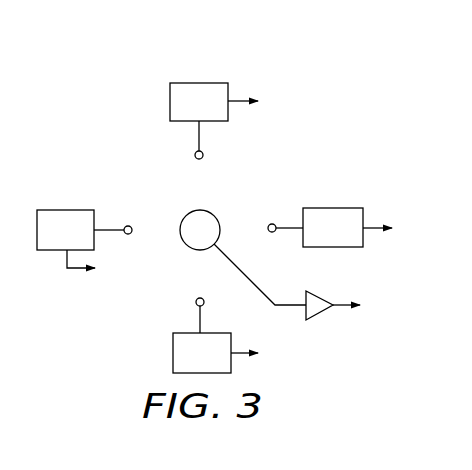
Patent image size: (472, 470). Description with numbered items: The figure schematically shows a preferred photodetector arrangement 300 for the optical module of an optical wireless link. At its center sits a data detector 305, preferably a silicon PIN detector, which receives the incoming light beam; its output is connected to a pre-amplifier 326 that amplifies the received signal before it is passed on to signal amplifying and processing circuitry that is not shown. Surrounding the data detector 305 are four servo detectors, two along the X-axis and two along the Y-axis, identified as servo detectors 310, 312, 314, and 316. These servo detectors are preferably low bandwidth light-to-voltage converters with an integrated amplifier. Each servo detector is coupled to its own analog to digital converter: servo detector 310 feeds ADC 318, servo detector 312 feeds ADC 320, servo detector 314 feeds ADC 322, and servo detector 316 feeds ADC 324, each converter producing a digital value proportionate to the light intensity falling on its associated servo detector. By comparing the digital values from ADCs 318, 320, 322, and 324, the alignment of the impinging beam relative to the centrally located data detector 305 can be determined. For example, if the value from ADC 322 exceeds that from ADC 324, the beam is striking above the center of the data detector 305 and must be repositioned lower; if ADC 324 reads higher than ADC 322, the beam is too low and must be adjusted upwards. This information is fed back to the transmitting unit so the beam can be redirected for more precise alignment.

The sensor system 300 is at (298, 130).
The data detector 305 is at (216, 216).
The servo detector 310 is at (127, 226).
The servo detector 312 is at (273, 233).
The servo detector 314 is at (195, 154).
The servo detector 316 is at (196, 303).
The analog to digital converter 318 is at (66, 210).
The analog to digital converter 320 is at (333, 208).
The analog to digital converter 322 is at (170, 101).
The analog to digital converter 324 is at (173, 350).
The pre-amplifier 326 is at (320, 317).